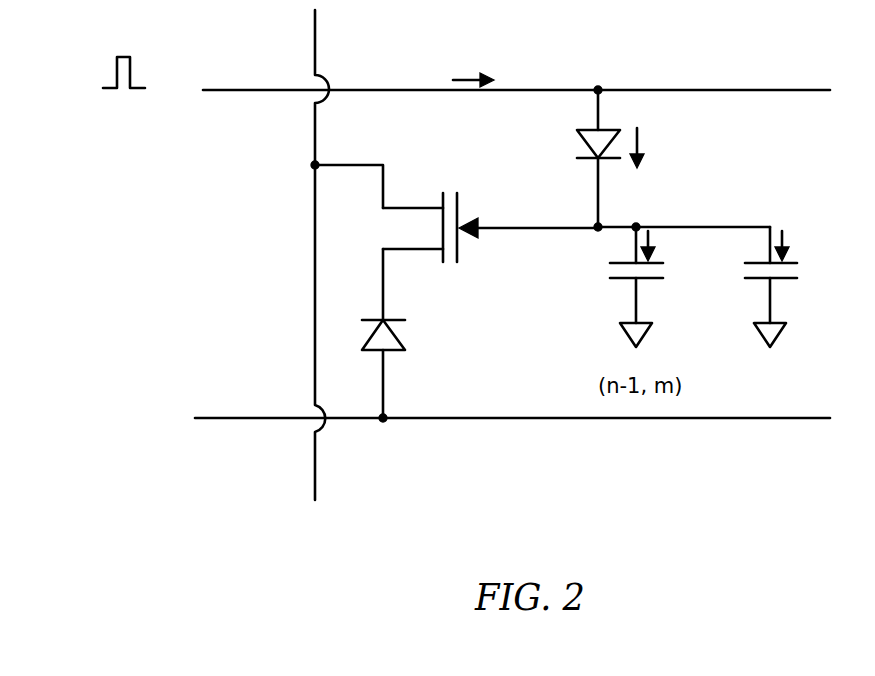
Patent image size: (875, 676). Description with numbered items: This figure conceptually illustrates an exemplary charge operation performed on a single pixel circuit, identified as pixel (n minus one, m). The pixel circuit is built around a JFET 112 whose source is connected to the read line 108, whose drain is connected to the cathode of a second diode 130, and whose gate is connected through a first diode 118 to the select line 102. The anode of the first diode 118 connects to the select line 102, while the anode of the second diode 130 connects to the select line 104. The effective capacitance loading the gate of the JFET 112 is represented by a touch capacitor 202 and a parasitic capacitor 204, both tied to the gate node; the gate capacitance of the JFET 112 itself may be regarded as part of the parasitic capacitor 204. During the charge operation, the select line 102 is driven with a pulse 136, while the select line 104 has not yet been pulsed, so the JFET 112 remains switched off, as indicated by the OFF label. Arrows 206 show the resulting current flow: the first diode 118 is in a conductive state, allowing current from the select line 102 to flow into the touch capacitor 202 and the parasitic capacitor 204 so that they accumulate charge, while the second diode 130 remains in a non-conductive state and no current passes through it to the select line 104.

The select line 102 is at (250, 90).
The select line 104 is at (250, 418).
The read line 108 is at (317, 470).
The JFET 112 is at (449, 178).
The first diode 118 is at (577, 141).
The second diode 130 is at (407, 342).
The pulse 136 is at (115, 70).
The touch capacitor 202 is at (614, 295).
The parasitic capacitor 204 is at (749, 295).
The arrows 206 is at (470, 76).